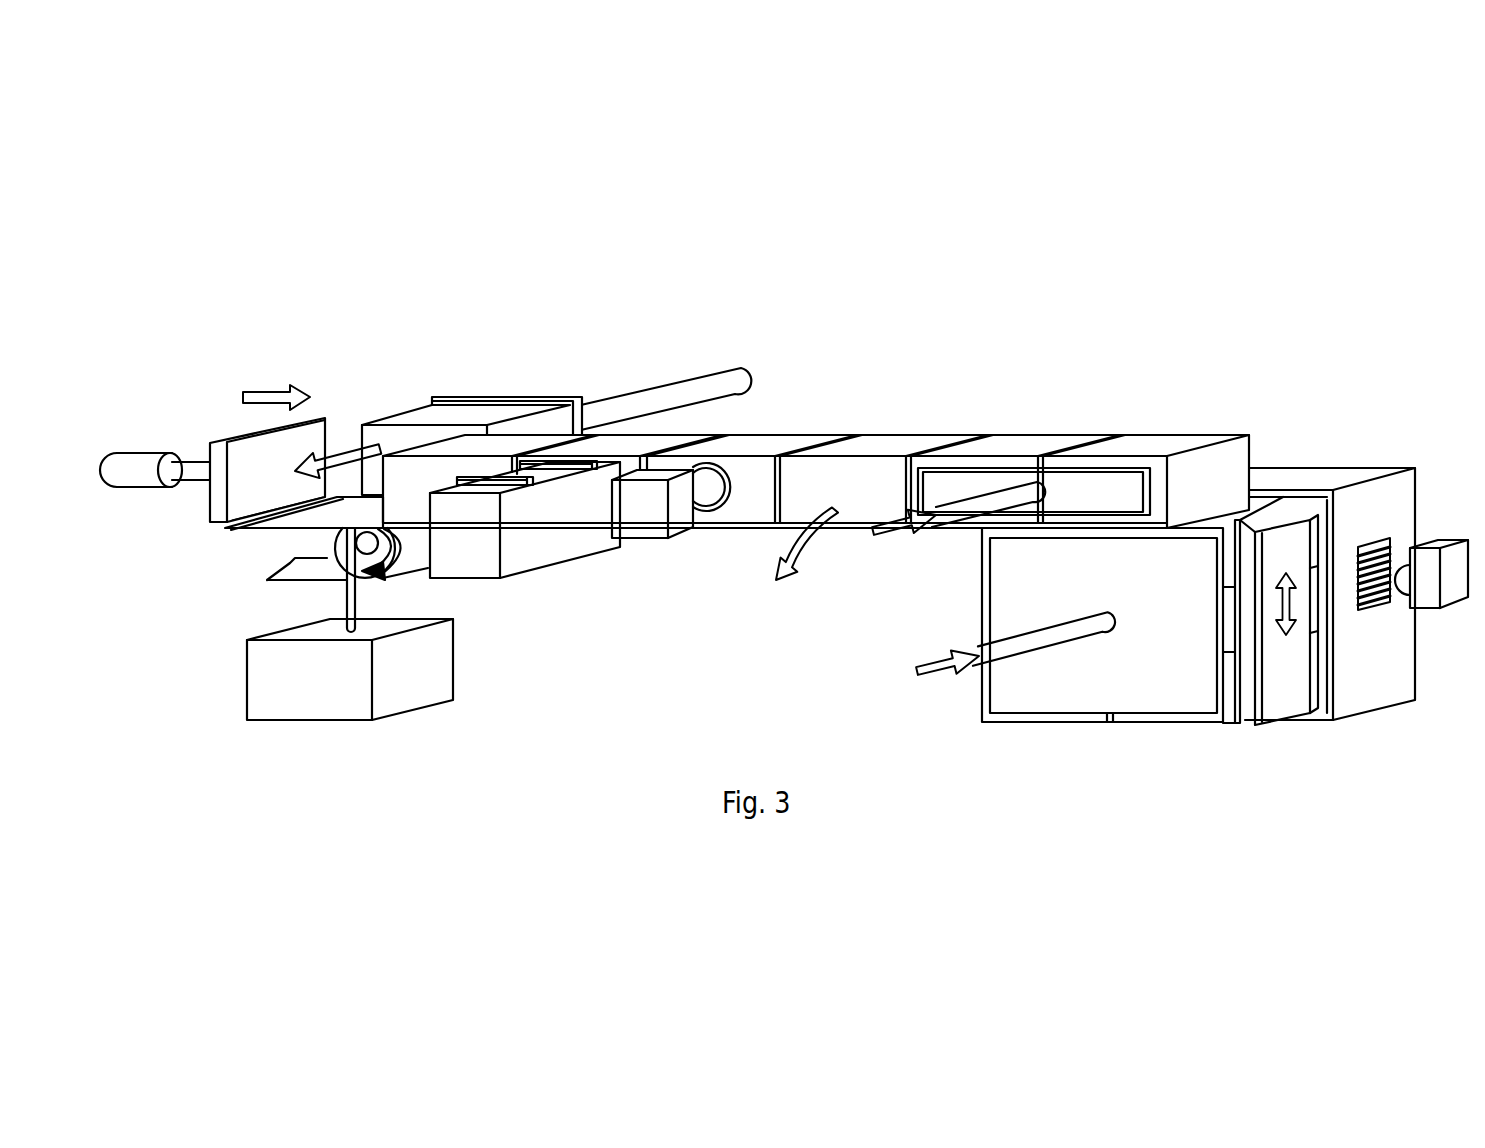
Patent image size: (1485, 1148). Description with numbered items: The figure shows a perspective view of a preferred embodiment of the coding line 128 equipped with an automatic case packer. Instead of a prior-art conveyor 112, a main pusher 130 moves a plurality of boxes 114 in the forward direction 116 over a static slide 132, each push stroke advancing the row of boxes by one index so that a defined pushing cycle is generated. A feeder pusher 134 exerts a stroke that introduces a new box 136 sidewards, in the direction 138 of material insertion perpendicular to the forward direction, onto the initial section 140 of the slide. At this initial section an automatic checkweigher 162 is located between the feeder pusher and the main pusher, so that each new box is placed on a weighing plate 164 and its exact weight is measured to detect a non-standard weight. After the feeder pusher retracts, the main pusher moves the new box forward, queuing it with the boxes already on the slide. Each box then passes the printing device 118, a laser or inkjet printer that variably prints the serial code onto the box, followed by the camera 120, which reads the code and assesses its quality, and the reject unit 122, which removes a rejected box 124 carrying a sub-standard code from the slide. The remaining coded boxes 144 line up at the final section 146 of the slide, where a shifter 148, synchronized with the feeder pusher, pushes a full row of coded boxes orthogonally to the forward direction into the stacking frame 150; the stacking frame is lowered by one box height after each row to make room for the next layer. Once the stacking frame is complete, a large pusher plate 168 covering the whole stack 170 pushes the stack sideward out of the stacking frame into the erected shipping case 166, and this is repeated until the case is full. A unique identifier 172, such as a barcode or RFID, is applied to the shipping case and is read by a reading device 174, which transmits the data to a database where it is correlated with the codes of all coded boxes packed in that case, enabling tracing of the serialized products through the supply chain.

The conveyor 112 is at (402, 582).
The box 114 is at (628, 440).
The forward direction 116 is at (257, 397).
The printing device 118 is at (535, 562).
The camera 120 is at (678, 527).
The reject unit 122 is at (797, 560).
The rejected box 124 is at (897, 442).
The coding line 128 is at (390, 307).
The main pusher 130 is at (236, 434).
The slide 132 is at (760, 525).
The feeder pusher 134 is at (555, 395).
The new box 136 is at (450, 413).
The direction of material insertion 138 is at (343, 453).
The initial section 140 is at (312, 513).
The coded box 144 is at (778, 442).
The final section 146 is at (943, 537).
The shifter 148 is at (1105, 505).
The stacking frame 150 is at (1283, 707).
The automatic checkweigher 162 is at (418, 695).
The weighing plate 164 is at (323, 515).
The shipping case 166 is at (1317, 477).
The large pusher plate 168 is at (1120, 587).
The stack 170 is at (1245, 725).
The unique identifier 172 is at (1373, 610).
The reading device 174 is at (1447, 545).